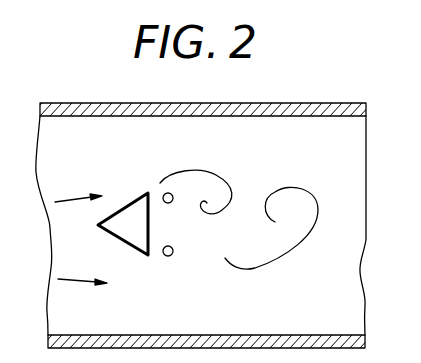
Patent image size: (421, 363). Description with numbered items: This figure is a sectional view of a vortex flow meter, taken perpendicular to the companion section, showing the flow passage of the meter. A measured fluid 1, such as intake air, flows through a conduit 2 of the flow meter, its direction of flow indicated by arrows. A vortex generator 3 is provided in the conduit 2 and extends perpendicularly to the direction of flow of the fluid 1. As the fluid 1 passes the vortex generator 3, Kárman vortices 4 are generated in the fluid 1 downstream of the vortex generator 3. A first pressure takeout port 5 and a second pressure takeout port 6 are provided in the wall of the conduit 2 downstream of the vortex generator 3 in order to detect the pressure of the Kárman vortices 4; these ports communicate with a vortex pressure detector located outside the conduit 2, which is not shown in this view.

The measured fluid 1 is at (50, 162).
The conduit 2 is at (318, 111).
The vortex generator 3 is at (125, 244).
The Kárman vortices 4 is at (288, 187).
The first pressure takeout port 5 is at (172, 203).
The second pressure takeout port 6 is at (169, 257).